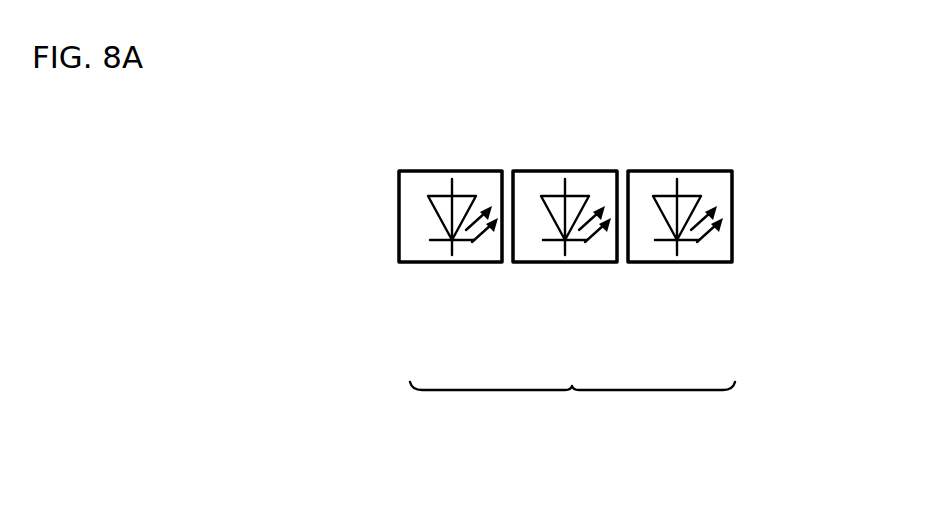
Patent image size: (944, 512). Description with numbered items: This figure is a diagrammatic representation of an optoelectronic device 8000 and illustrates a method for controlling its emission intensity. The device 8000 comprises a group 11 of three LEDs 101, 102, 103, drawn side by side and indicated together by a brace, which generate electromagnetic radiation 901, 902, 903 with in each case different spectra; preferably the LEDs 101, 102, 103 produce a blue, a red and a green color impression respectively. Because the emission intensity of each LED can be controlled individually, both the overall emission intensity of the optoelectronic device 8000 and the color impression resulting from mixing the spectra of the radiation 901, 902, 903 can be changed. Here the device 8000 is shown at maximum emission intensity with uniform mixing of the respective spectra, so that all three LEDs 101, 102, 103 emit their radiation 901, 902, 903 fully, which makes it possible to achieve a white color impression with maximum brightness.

The optoelectronic device 8000 is at (348, 98).
The group 11 is at (572, 392).
The LED 101 is at (468, 193).
The LED 102 is at (577, 193).
The LED 103 is at (687, 192).
The electromagnetic radiation 901 is at (486, 233).
The electromagnetic radiation 902 is at (600, 236).
The electromagnetic radiation 903 is at (722, 215).